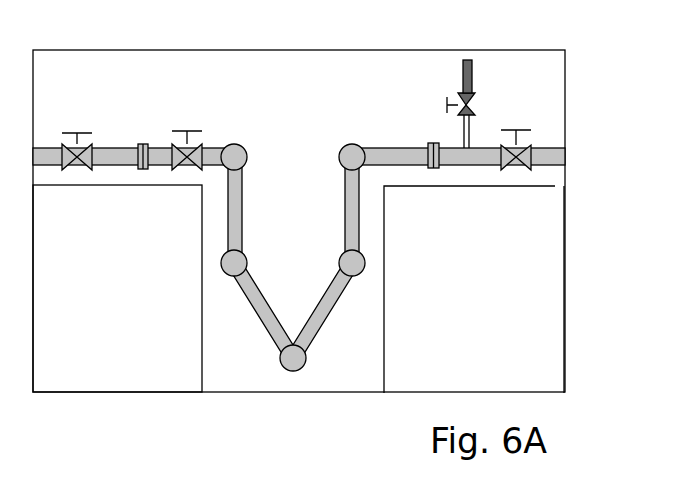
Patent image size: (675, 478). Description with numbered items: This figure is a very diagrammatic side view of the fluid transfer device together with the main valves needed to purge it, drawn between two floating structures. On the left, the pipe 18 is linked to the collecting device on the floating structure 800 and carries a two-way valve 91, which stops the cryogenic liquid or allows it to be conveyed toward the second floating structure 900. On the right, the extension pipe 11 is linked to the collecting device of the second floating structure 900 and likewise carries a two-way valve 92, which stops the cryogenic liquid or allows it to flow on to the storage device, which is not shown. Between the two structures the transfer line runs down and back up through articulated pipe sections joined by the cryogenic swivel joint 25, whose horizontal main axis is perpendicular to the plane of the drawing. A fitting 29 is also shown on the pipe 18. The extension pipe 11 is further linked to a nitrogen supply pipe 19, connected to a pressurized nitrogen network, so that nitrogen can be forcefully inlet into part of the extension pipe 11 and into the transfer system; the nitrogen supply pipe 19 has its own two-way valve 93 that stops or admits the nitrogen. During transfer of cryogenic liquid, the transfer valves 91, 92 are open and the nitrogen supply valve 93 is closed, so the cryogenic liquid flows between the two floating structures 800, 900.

The extension pipe 11 is at (388, 148).
The pipe 18 is at (117, 155).
The nitrogen supply pipe 19 is at (470, 70).
The cryogenic swivel joint 25 is at (295, 362).
The coupling 29 is at (152, 142).
The two-way valve 91 is at (65, 133).
The two-way valve 92 is at (531, 147).
The two-way valve 93 is at (475, 100).
The floating structure 800 is at (130, 354).
The second floating structure 900 is at (507, 352).